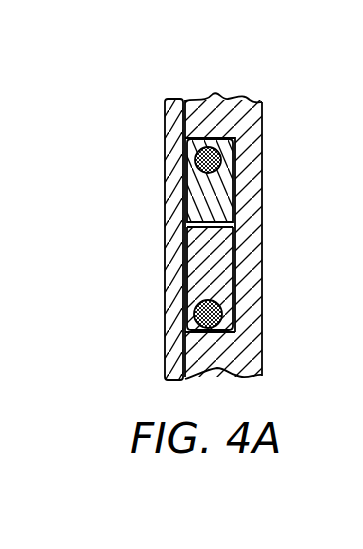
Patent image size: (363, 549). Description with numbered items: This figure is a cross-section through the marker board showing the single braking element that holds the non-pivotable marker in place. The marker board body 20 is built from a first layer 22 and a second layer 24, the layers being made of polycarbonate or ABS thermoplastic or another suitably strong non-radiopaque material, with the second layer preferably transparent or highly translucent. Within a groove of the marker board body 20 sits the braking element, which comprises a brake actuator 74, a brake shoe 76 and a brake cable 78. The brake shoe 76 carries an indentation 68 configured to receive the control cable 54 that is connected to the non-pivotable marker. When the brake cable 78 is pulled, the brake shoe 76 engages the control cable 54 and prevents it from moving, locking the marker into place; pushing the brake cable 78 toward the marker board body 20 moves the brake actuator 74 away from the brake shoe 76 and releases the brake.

The marker board body 20 is at (220, 97).
The first layer 22 is at (278, 110).
The second layer 24 is at (165, 112).
The control cable 54 is at (196, 331).
The indentation 68 is at (233, 330).
The brake actuator 74 is at (236, 178).
The brake shoe 76 is at (217, 257).
The brake cable 78 is at (170, 148).